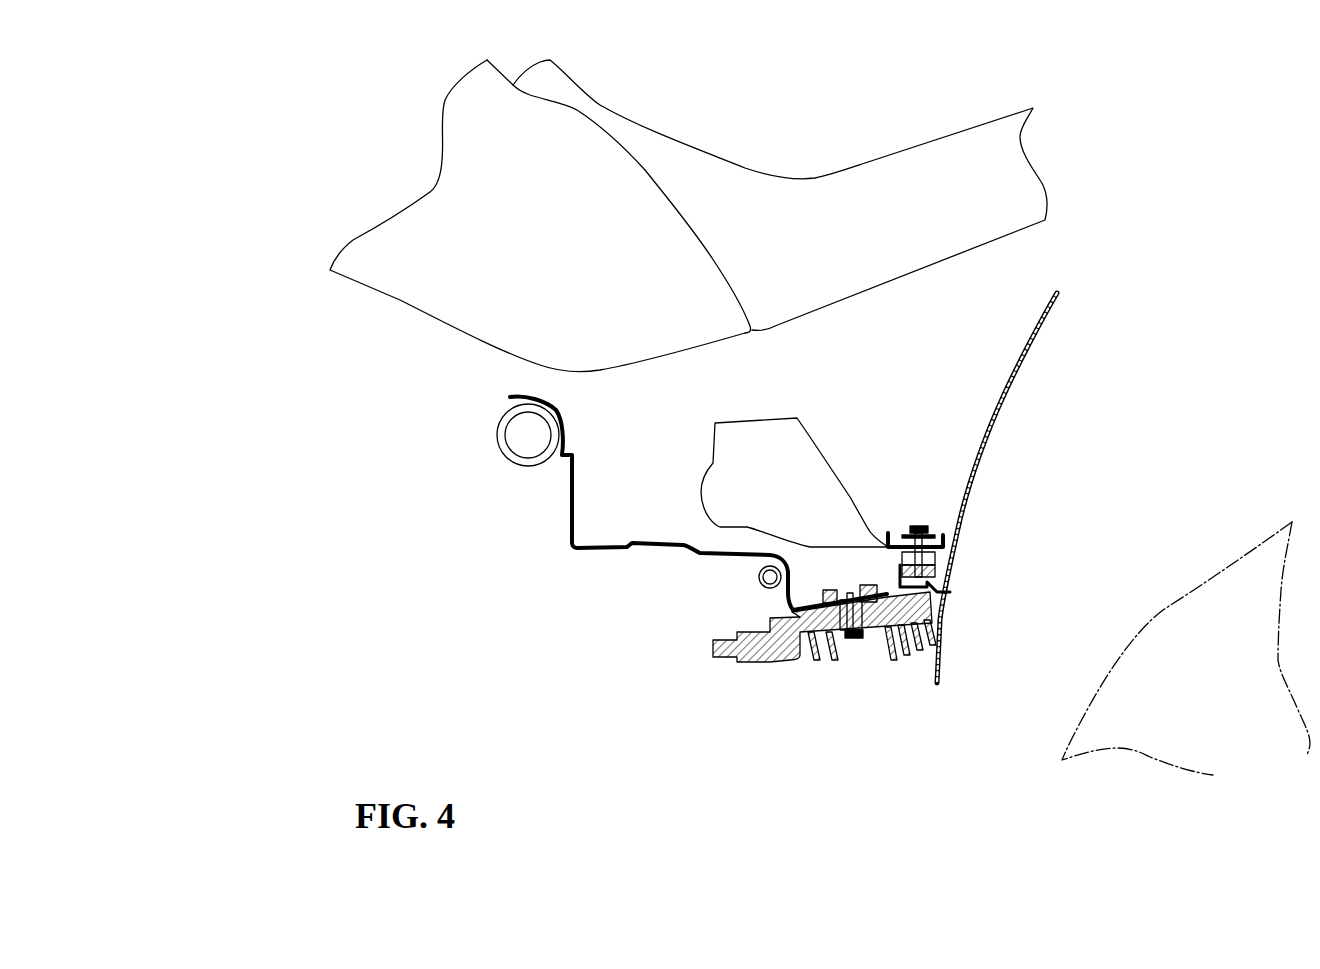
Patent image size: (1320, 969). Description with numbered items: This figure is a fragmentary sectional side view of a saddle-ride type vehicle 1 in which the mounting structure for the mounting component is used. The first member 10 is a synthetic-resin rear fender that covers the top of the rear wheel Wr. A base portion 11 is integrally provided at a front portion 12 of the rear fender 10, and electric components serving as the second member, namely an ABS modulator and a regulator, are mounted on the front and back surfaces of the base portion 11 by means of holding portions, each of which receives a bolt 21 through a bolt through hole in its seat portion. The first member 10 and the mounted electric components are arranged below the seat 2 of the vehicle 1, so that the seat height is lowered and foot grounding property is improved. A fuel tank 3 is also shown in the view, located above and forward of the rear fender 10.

The saddle-ride type vehicle 1 is at (702, 108).
The seat 2 is at (861, 187).
The fuel tank 3 is at (440, 203).
The first member 10 is at (1007, 397).
The base portion 11 is at (810, 600).
The front portion 12 is at (707, 568).
The bolt 21 is at (918, 527).
The rear wheel Wr is at (1190, 588).